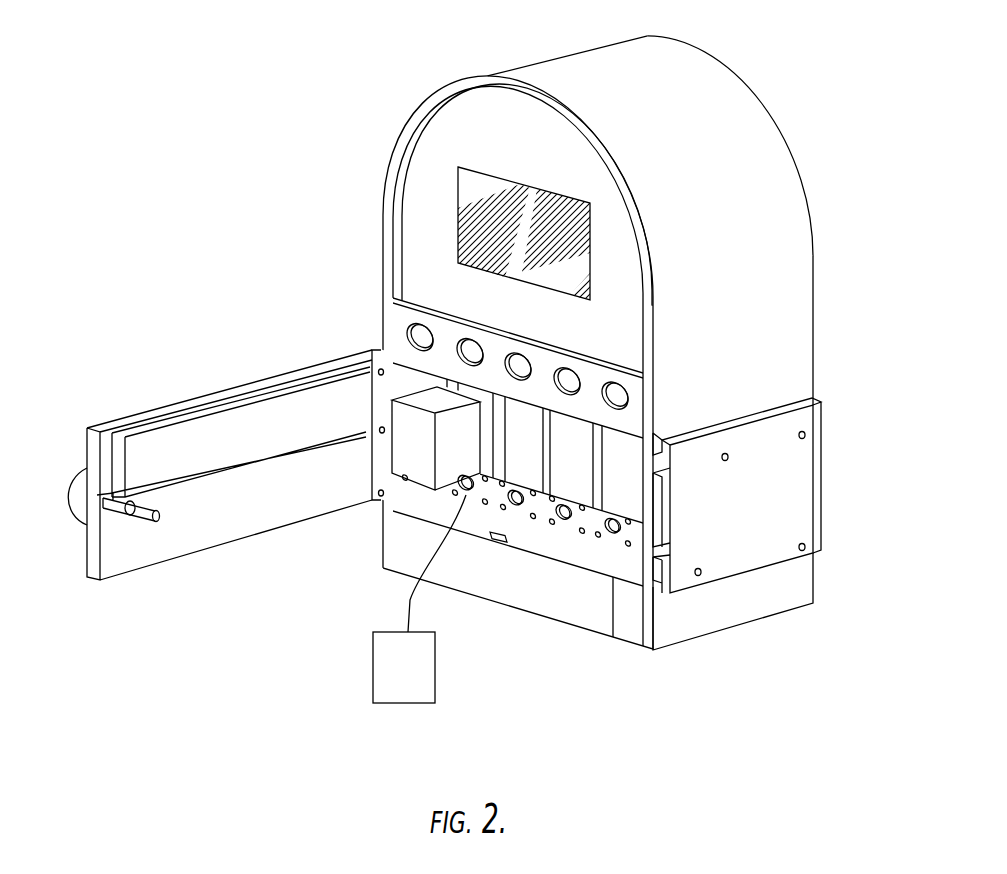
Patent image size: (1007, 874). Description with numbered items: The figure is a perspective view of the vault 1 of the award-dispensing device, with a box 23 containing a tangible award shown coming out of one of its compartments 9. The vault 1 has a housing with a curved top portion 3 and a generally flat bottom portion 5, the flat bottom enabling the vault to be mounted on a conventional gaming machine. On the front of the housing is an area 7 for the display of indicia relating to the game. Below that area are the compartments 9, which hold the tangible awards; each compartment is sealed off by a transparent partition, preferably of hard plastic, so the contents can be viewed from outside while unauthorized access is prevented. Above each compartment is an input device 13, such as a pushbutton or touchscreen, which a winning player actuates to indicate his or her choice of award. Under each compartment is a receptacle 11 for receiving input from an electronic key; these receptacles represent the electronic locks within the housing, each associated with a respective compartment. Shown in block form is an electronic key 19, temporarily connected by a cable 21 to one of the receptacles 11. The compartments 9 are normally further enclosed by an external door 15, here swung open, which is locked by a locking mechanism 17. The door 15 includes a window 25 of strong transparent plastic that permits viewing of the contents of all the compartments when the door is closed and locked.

The vault 1 is at (774, 96).
The curved top portion 3 is at (752, 217).
The flat bottom portion 5 is at (720, 618).
The area for display of indicia 7 is at (478, 233).
The compartments 9 is at (570, 453).
The receptacle 11 is at (562, 520).
The input device 13 is at (468, 338).
The external door 15 is at (203, 395).
The locking mechanism 17 is at (755, 492).
The electronic key 19 is at (400, 693).
The cable 21 is at (408, 608).
The box 23 is at (415, 430).
The window 25 is at (218, 435).